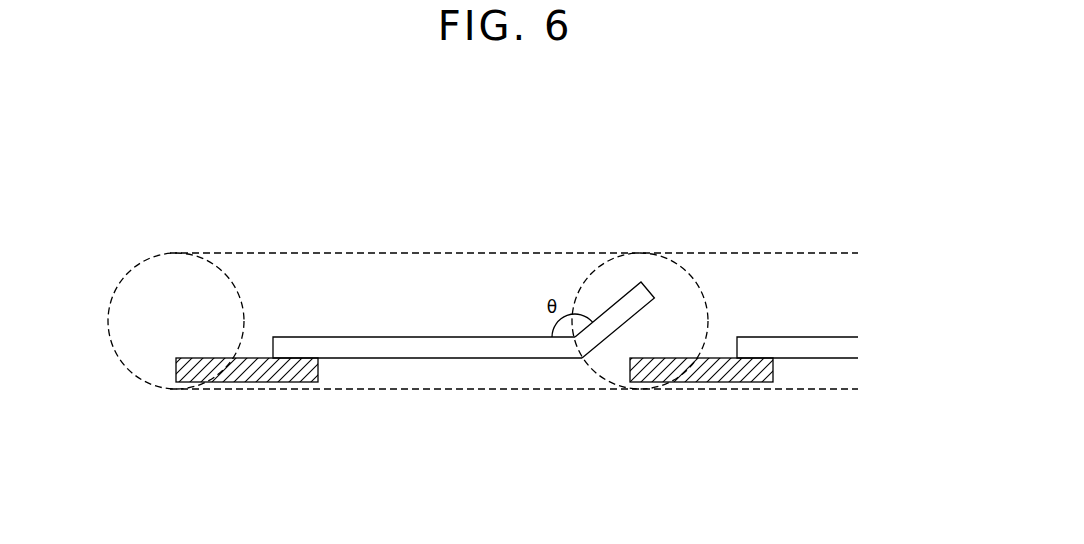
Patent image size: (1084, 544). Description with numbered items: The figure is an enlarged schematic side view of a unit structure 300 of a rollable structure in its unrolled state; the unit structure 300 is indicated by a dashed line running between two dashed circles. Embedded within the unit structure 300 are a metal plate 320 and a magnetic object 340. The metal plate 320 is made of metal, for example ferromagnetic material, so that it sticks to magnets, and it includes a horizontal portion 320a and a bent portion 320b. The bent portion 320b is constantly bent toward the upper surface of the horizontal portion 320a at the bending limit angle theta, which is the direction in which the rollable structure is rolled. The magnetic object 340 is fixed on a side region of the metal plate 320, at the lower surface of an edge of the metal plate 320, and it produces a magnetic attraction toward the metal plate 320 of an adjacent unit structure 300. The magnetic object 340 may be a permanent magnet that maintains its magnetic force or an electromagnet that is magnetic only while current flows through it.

The unit structure 300 is at (525, 246).
The magnetic object 340 is at (252, 373).
The metal plate 320 is at (463, 386).
The horizontal portion 320a is at (431, 358).
The bent portion 320b is at (614, 367).